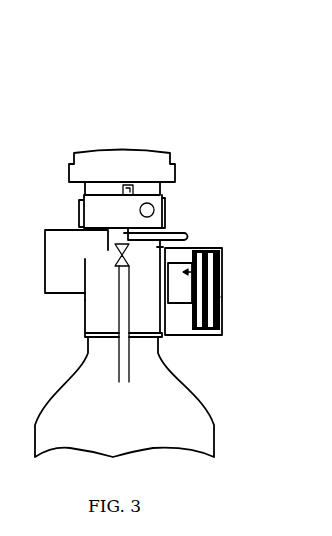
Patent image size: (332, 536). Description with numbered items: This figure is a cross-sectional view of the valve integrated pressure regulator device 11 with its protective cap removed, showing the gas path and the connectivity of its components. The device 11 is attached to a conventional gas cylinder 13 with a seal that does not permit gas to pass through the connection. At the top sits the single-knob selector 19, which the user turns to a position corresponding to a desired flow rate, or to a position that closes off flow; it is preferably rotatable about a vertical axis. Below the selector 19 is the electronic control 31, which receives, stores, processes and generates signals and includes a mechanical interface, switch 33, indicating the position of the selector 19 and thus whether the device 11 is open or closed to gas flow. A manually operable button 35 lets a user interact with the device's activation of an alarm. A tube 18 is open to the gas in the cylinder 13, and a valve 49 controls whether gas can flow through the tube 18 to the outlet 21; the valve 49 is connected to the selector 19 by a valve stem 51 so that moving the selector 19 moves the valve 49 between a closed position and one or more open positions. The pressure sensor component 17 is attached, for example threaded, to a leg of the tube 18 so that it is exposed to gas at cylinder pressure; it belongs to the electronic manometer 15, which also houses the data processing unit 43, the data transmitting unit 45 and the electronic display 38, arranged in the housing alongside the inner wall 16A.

The valve integrated pressure regulator device 11 is at (85, 328).
The gas cylinder 13 is at (193, 389).
The electronic manometer 15 is at (190, 335).
The inner wall 16A is at (85, 266).
The pressure sensor component 17 is at (222, 253).
The tube 18 is at (119, 290).
The single-knob selector 19 is at (171, 158).
The outlet 21 is at (186, 235).
The electronic control 31 is at (82, 219).
The switch 33 is at (134, 191).
The button 35 is at (155, 211).
The electronic display 38 is at (222, 318).
The data processing unit 43 is at (215, 276).
The data transmitting unit 45 is at (222, 297).
The valve 49 is at (115, 251).
The valve stem 51 is at (92, 246).